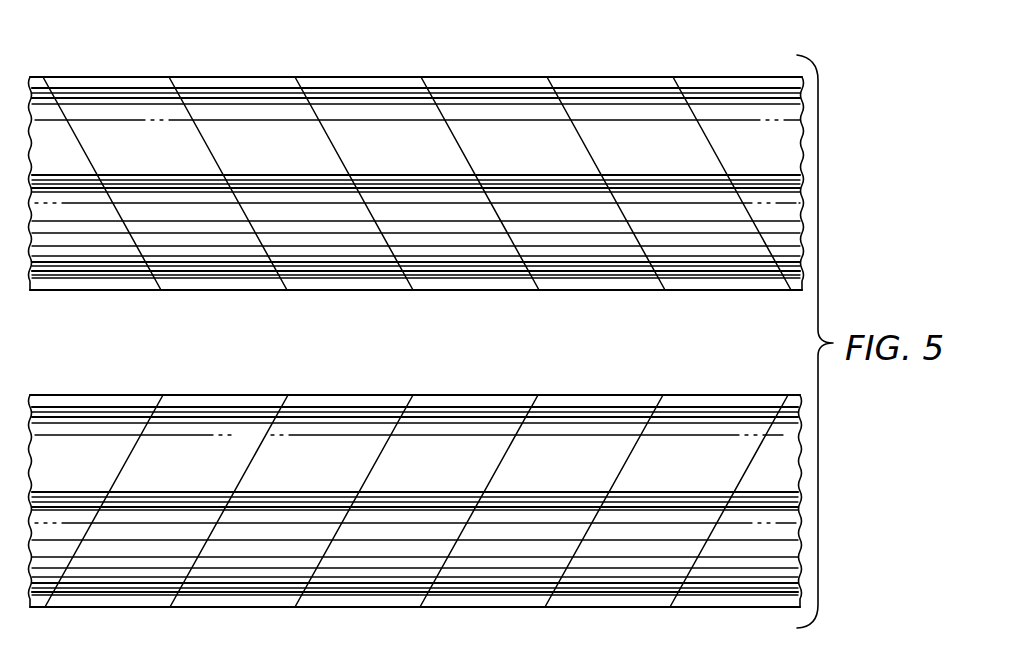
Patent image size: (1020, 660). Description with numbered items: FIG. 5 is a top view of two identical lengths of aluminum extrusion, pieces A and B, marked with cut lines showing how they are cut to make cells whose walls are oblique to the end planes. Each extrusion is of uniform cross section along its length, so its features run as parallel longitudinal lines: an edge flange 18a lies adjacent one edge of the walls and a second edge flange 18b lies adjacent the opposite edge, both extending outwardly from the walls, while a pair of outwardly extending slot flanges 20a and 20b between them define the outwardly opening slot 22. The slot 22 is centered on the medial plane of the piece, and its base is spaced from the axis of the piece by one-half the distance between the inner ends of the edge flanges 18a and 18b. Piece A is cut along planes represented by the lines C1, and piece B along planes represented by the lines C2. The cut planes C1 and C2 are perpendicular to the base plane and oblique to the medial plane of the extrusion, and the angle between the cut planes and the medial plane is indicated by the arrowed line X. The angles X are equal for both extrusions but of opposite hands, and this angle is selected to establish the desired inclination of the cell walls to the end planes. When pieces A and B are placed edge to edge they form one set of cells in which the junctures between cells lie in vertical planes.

The piece A is at (462, 77).
The piece B is at (448, 394).
The edge flange 18a is at (724, 80).
The edge flange 18b is at (751, 290).
The slot flange 20a is at (657, 181).
The slot flange 20b is at (410, 192).
The slot 22 is at (759, 182).
The cut plane C1 is at (573, 127).
The cut plane C2 is at (628, 462).
The angle X is at (203, 123).